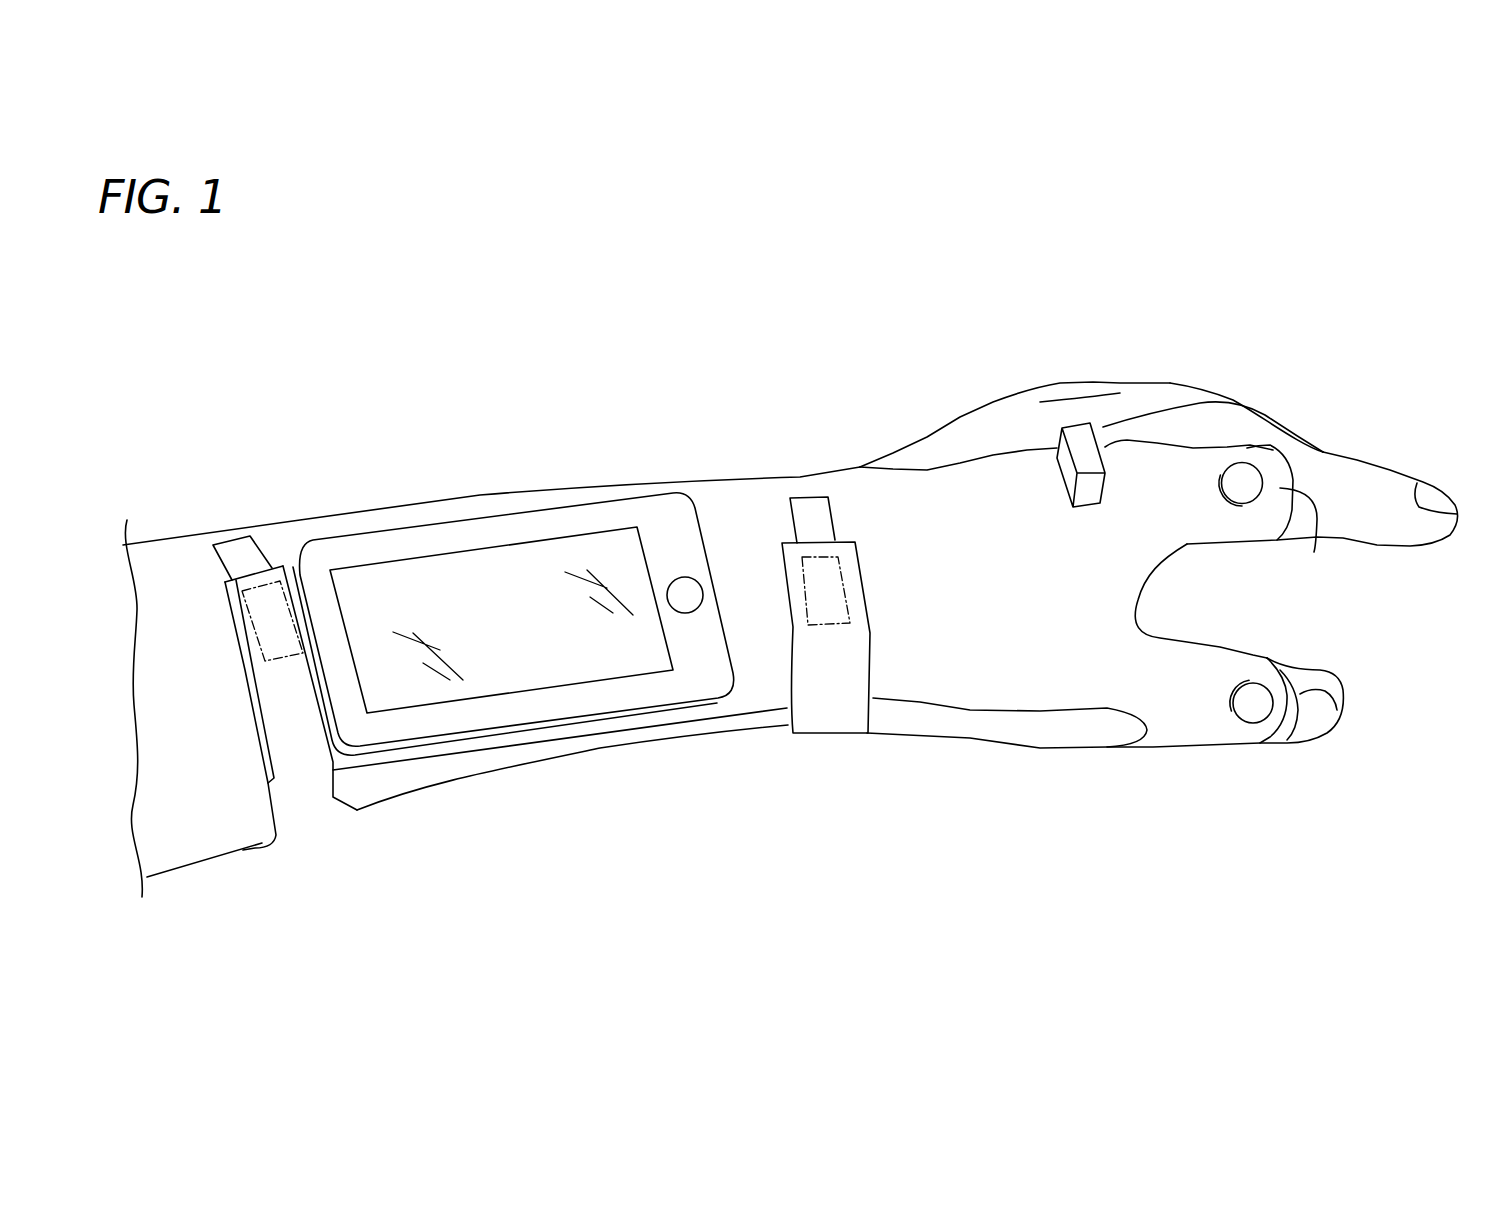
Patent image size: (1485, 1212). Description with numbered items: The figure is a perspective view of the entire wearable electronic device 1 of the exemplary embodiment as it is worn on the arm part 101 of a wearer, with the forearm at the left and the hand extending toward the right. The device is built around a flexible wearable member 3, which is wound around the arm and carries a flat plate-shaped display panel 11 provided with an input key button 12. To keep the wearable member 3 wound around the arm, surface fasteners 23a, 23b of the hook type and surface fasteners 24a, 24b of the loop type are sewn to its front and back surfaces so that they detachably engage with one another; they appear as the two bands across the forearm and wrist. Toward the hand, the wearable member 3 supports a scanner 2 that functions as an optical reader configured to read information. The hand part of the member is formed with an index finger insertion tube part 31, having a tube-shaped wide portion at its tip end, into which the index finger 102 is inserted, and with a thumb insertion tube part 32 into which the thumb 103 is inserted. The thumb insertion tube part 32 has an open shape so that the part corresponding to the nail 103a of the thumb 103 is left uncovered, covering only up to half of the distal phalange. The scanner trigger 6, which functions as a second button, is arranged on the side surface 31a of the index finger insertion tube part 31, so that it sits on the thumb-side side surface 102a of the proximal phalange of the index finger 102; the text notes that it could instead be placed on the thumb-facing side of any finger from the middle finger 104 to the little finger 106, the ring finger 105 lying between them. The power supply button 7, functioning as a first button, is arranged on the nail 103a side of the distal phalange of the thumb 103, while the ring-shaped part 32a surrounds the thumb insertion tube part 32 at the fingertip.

The wearable electronic device 1 is at (621, 444).
The scanner 2 is at (1080, 432).
The wearable member 3 is at (513, 489).
The scanner trigger 6 is at (1242, 487).
The power supply button 7 is at (1257, 703).
The display panel 11 is at (650, 500).
The input key button 12 is at (688, 593).
The surface fastener (hook) 23a is at (833, 585).
The surface fastener (hook) 23b is at (260, 630).
The surface fastener (loop) 24a is at (820, 513).
The surface fastener (loop) 24b is at (248, 550).
The index finger insertion tube part 31 is at (1250, 457).
The side surface 31a is at (1314, 552).
The thumb insertion tube part 32 is at (1197, 737).
The finger attachment ring 32a is at (1283, 703).
The arm part 101 is at (192, 863).
The index finger 102 is at (1360, 490).
The side surface 102a is at (1373, 530).
The thumb 103 is at (1320, 670).
The nail 103a is at (1320, 720).
The middle finger 104 is at (1247, 420).
The back of hand 105 is at (1180, 400).
The little finger 106 is at (1120, 380).